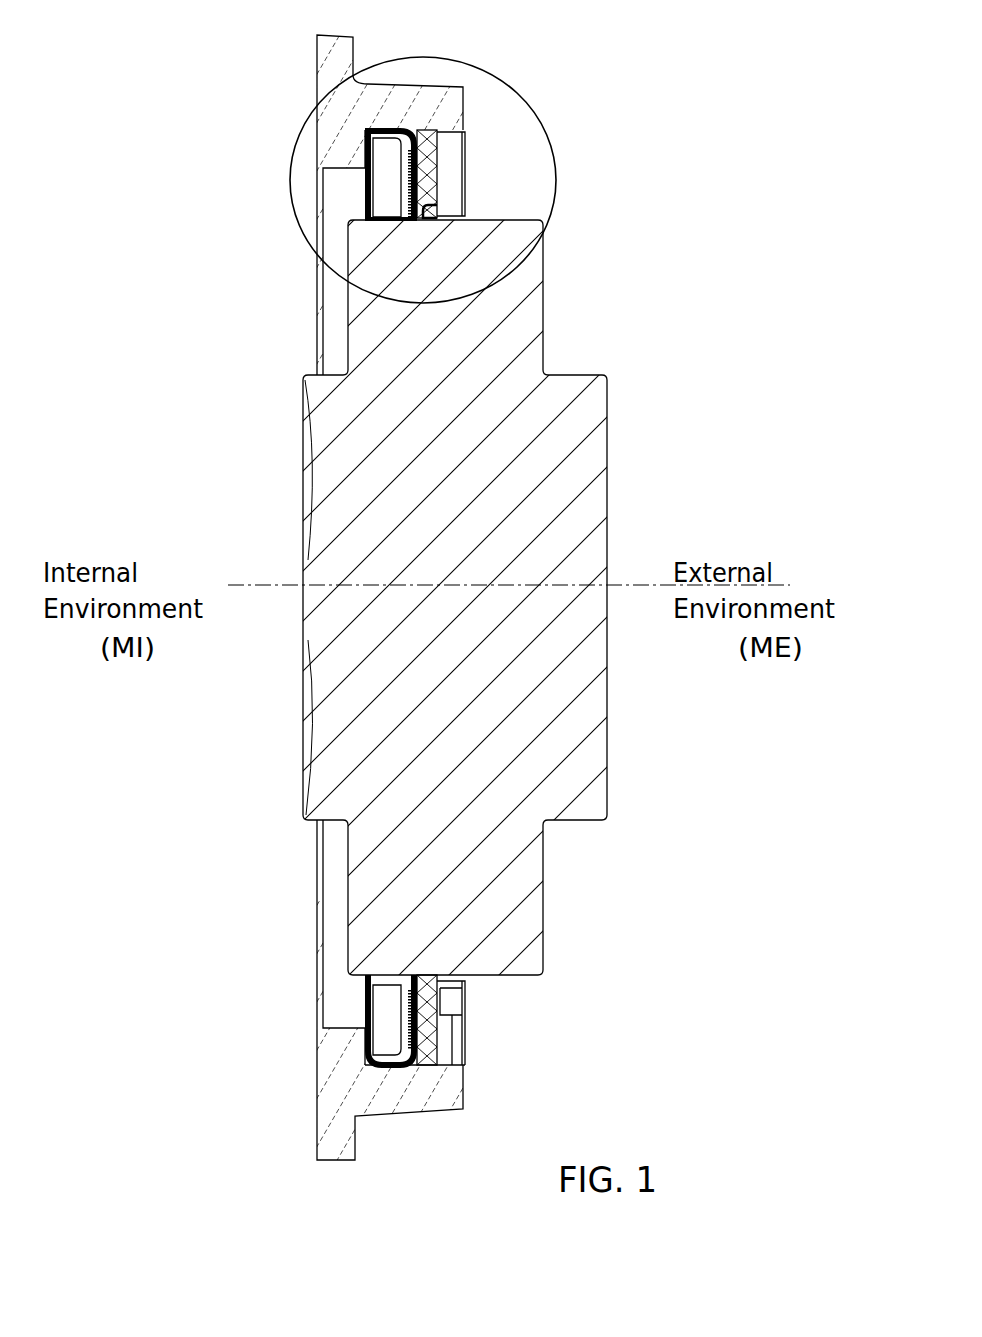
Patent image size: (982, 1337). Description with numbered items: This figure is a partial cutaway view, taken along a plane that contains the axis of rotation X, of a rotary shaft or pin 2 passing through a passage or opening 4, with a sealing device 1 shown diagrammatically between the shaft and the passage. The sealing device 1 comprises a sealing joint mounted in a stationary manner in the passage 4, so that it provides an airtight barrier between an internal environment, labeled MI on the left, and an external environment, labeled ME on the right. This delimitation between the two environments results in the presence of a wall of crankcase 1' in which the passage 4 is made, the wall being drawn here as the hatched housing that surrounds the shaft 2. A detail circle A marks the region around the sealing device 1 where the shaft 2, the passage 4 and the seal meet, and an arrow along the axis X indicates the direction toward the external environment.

The sealing device 1 is at (495, 153).
The wall of crankcase 1' is at (415, 1098).
The rotary shaft or pin 2 is at (587, 762).
The passage or opening 4 is at (285, 170).
The detail circle A is at (318, 107).
The axis of rotation X is at (790, 585).